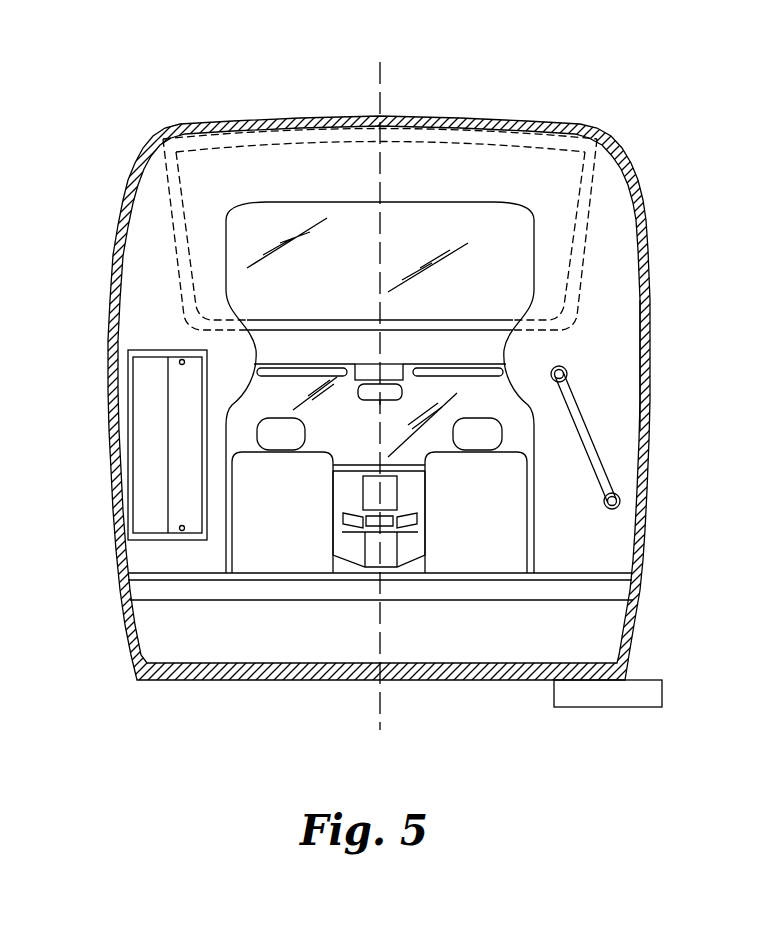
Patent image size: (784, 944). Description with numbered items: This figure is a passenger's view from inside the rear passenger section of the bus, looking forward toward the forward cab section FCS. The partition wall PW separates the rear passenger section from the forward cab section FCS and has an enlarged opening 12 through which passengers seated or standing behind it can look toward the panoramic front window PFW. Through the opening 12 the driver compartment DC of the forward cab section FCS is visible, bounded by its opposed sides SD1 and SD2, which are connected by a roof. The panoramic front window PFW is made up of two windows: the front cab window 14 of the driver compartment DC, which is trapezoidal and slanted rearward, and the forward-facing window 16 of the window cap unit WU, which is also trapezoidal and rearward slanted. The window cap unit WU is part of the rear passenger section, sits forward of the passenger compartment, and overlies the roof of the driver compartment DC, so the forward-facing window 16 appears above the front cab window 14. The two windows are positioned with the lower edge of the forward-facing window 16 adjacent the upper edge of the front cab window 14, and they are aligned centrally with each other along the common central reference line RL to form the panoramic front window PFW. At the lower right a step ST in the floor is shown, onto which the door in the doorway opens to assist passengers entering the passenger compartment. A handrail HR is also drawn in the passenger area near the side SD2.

The common central reference line RL is at (399, 383).
The forward-facing window 16 is at (228, 168).
The window cap unit WU is at (152, 175).
The side SD1 is at (117, 250).
The panoramic front window PFW is at (478, 233).
The enlarged opening 12 is at (478, 283).
The forward cab section FCS is at (477, 405).
The driver compartment DC is at (290, 400).
The side SD2 is at (650, 375).
The handrail HR is at (603, 468).
The partition wall PW is at (608, 546).
The step ST is at (638, 686).
The front cab window 14 is at (412, 420).